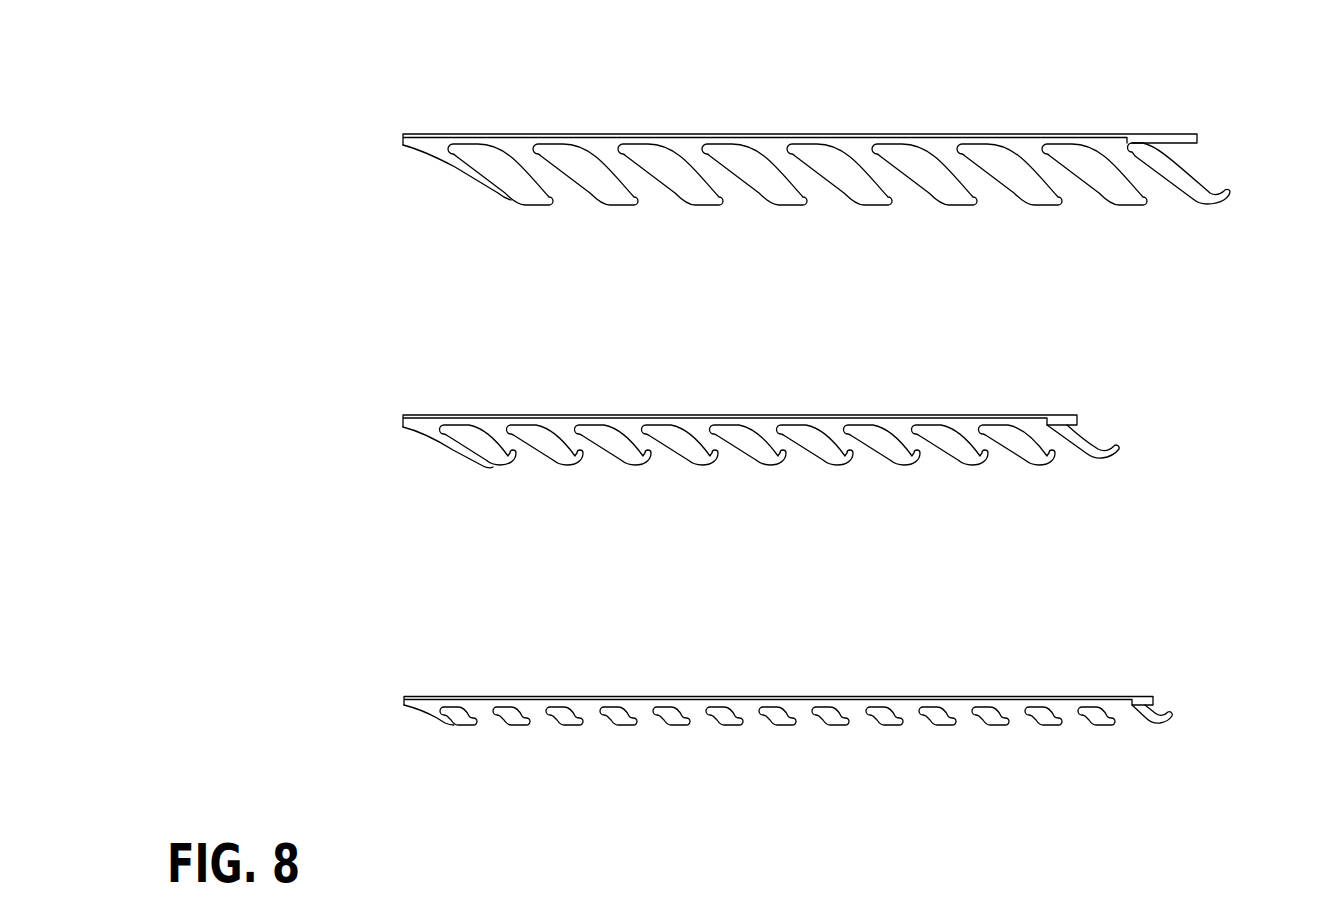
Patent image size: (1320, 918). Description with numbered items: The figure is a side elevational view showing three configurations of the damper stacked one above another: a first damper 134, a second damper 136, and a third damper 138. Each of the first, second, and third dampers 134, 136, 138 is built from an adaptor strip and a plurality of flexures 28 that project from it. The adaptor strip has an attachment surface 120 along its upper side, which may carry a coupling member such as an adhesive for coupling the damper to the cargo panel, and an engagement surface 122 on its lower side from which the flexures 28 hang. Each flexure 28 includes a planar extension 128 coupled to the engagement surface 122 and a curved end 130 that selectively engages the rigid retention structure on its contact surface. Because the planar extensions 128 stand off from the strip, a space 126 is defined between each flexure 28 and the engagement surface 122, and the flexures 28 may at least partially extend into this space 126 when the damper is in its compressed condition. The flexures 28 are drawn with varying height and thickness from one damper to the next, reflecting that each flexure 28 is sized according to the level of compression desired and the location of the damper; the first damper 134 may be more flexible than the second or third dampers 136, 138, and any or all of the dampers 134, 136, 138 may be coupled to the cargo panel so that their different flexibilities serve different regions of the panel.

The flexure 28 is at (798, 439).
The attachment surface 120 is at (677, 134).
The engagement surface 122 is at (1180, 143).
The space 126 is at (583, 158).
The planar extension 128 is at (760, 183).
The curved end 130 is at (712, 204).
The first damper 134 is at (350, 136).
The second damper 136 is at (350, 385).
The third damper 138 is at (350, 660).